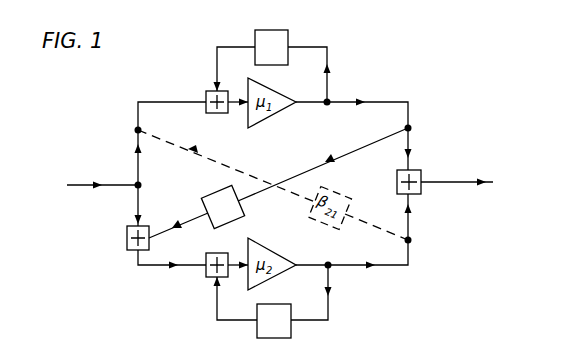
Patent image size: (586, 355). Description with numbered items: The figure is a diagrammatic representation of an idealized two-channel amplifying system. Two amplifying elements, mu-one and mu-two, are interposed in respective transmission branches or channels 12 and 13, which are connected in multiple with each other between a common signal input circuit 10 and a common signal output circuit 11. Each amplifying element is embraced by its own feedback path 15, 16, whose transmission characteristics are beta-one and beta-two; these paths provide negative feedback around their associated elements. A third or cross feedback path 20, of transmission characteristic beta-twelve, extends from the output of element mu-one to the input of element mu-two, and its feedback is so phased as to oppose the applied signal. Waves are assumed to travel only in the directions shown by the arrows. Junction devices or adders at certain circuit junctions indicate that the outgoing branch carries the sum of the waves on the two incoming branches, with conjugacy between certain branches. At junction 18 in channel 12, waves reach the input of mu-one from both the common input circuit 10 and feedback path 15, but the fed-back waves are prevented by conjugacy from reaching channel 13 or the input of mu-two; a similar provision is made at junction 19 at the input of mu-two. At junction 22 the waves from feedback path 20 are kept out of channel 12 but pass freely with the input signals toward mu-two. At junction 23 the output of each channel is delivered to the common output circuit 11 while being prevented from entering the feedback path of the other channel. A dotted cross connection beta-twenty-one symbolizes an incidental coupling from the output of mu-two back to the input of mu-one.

The common signal input circuit 10 is at (85, 181).
The common signal output circuit 11 is at (460, 182).
The transmission branch or channel 12 is at (157, 102).
The transmission branch or channel 13 is at (188, 268).
The feedback path 15 is at (313, 47).
The feedback path 16 is at (306, 320).
The junction 18 is at (209, 113).
The junction 19 is at (219, 239).
The cross feedback path 20 is at (350, 151).
The junction 22 is at (127, 238).
The junction 23 is at (421, 169).